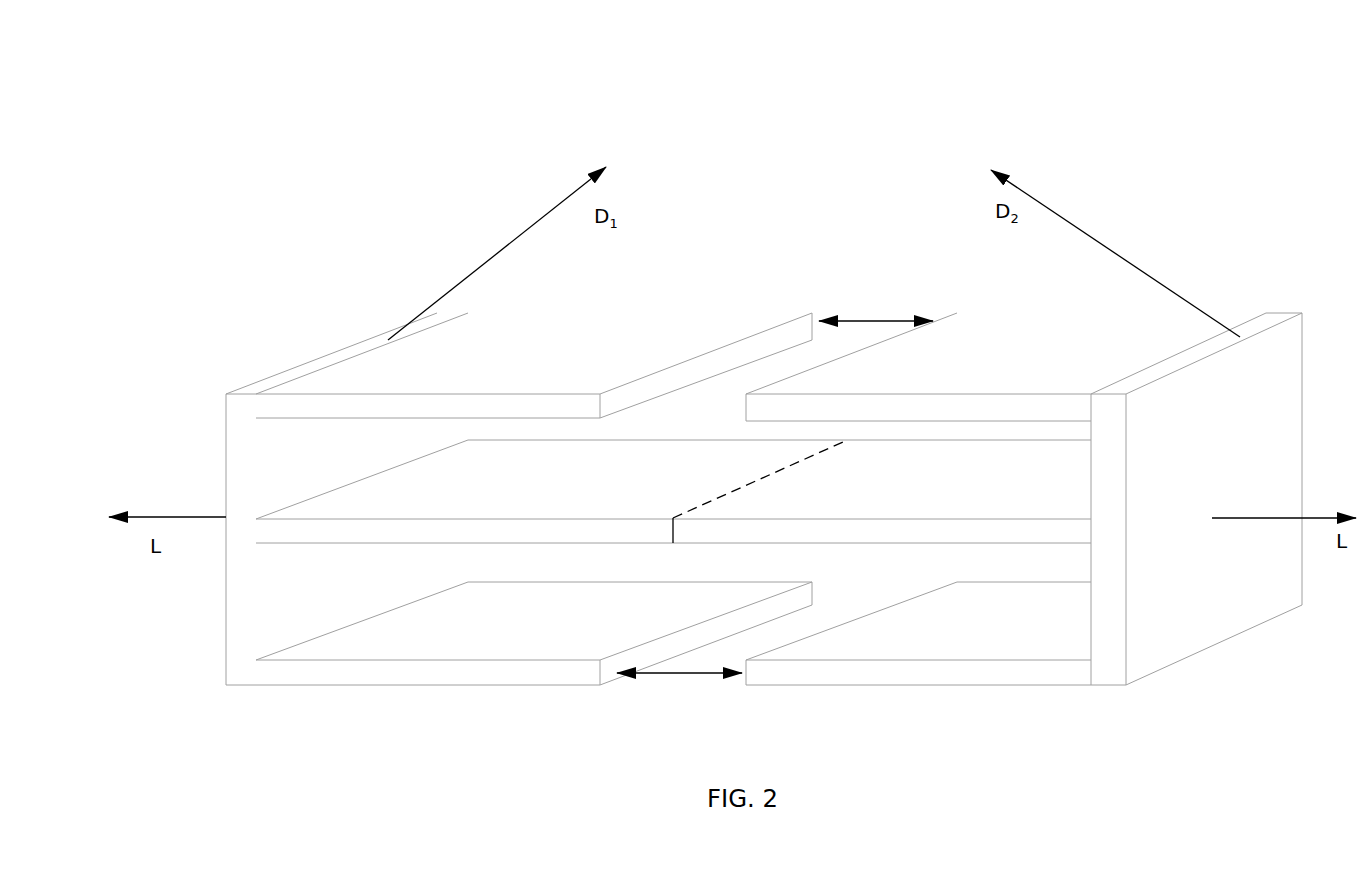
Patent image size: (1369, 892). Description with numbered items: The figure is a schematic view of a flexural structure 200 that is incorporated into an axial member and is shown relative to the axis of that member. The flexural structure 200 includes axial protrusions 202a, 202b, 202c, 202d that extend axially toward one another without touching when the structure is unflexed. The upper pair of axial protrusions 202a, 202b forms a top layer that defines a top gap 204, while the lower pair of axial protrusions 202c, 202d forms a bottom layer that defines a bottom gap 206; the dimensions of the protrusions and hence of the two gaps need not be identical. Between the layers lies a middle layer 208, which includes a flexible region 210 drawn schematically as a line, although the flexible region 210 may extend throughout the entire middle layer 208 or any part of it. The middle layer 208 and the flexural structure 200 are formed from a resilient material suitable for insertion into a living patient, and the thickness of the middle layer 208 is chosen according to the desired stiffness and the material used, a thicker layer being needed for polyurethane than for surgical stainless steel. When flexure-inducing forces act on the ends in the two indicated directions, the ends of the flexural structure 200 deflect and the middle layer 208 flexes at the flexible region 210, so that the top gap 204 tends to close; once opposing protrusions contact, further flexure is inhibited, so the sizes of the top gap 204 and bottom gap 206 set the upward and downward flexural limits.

The flexural structure 200 is at (338, 113).
The axial protrusion 202a is at (632, 376).
The axial protrusion 202b is at (1030, 376).
The axial protrusion 202c is at (632, 640).
The axial protrusion 202d is at (1030, 640).
The top gap 204 is at (882, 321).
The bottom gap 206 is at (706, 676).
The middle layer 208 is at (635, 496).
The flexible region 210 is at (765, 477).